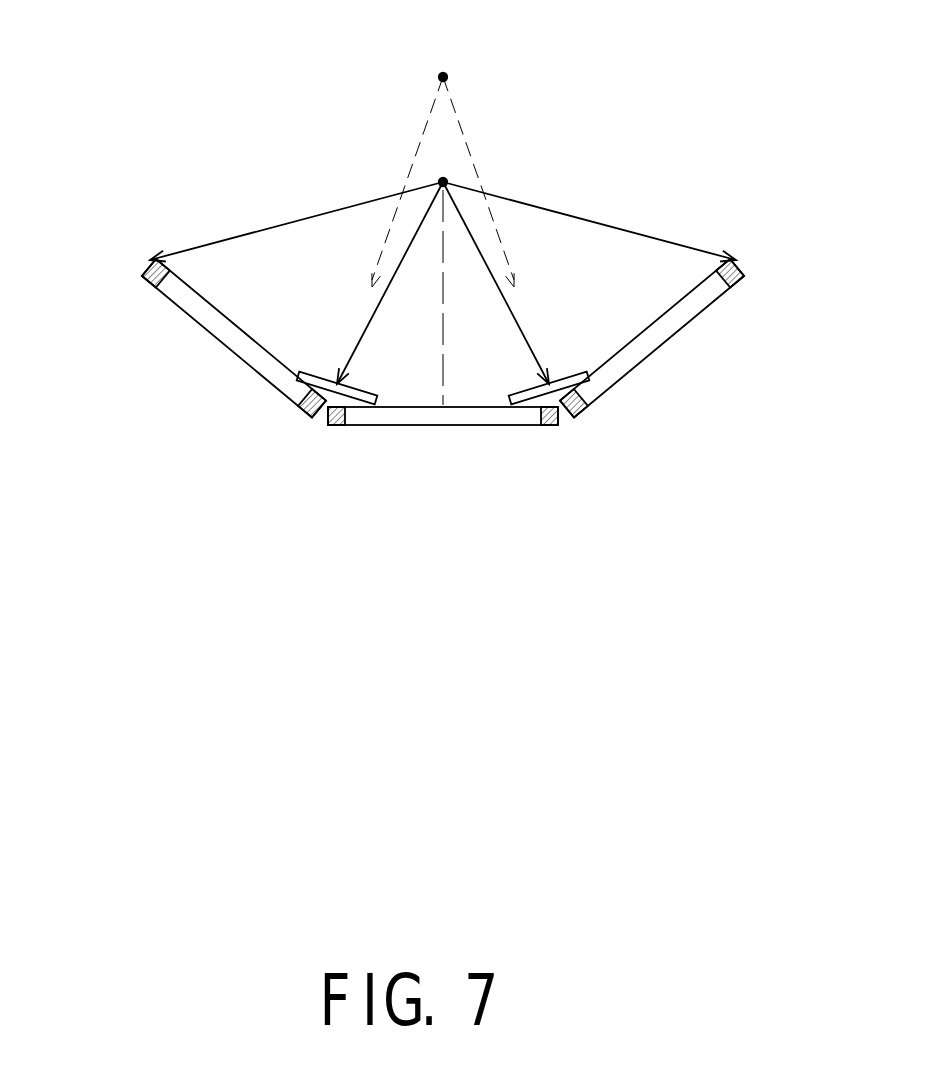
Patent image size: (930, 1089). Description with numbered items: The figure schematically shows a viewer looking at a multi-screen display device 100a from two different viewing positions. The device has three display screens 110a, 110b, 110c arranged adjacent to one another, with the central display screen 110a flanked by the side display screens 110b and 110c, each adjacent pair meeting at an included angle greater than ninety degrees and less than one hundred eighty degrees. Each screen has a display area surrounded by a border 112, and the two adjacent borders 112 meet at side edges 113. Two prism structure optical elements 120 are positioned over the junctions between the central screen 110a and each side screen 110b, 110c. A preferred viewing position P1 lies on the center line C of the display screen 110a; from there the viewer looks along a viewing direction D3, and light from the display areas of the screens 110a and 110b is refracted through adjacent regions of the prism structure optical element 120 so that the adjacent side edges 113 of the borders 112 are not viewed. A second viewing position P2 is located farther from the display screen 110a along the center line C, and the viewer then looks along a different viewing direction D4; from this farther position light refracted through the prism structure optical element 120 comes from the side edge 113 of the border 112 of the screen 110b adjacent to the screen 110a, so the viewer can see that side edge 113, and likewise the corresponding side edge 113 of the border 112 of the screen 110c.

The multi-screen display device 100a is at (114, 30).
The viewing position P2 is at (479, 48).
The viewing position P1 is at (443, 199).
The center line C is at (466, 353).
The viewing direction D4 is at (442, 182).
The viewing direction D3 is at (444, 266).
The prism structure optical element 120 is at (442, 347).
The display screen 110c is at (227, 362).
The display screen 110b is at (657, 361).
The display screen 110a is at (446, 489).
The side edge 113 is at (440, 411).
The border 112 is at (426, 387).